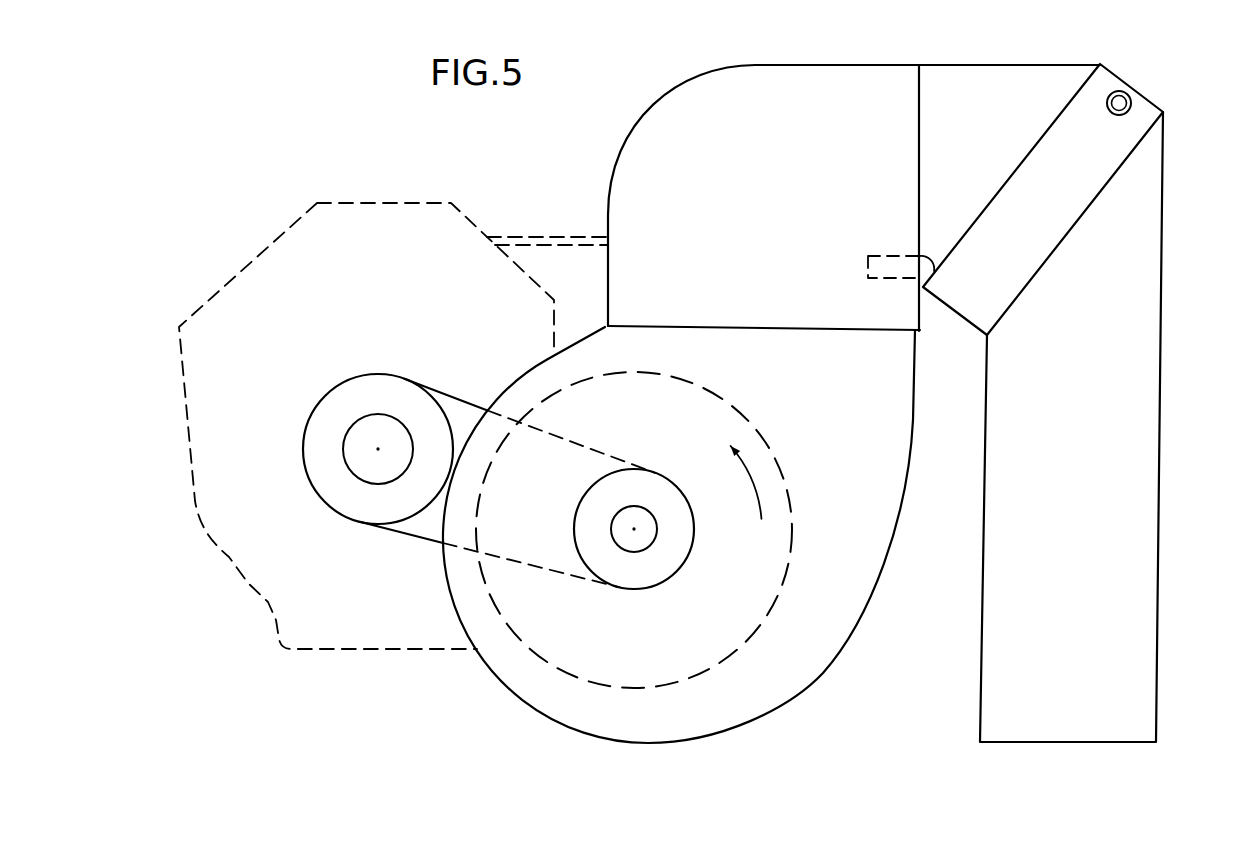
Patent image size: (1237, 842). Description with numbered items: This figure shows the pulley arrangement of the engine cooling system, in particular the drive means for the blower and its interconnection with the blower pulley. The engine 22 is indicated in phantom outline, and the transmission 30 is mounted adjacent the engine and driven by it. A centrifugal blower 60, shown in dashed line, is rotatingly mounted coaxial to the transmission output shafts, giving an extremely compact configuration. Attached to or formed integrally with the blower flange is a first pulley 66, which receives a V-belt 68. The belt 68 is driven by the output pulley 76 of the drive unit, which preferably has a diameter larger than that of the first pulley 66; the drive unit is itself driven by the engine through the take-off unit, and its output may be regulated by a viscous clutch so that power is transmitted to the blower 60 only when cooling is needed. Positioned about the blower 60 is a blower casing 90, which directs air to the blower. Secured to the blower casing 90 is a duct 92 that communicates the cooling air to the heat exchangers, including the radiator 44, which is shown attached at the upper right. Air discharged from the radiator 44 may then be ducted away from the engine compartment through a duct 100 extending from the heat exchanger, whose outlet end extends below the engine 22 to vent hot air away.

The engine 22 is at (245, 591).
The transmission 30 is at (578, 203).
The radiator 44 is at (1031, 242).
The blower 60 is at (563, 672).
The first pulley 66 is at (694, 539).
The V-belt 68 is at (466, 404).
The output pulley 76 is at (318, 434).
The blower casing 90 is at (713, 717).
The duct 92 is at (841, 226).
The duct 100 is at (1145, 372).